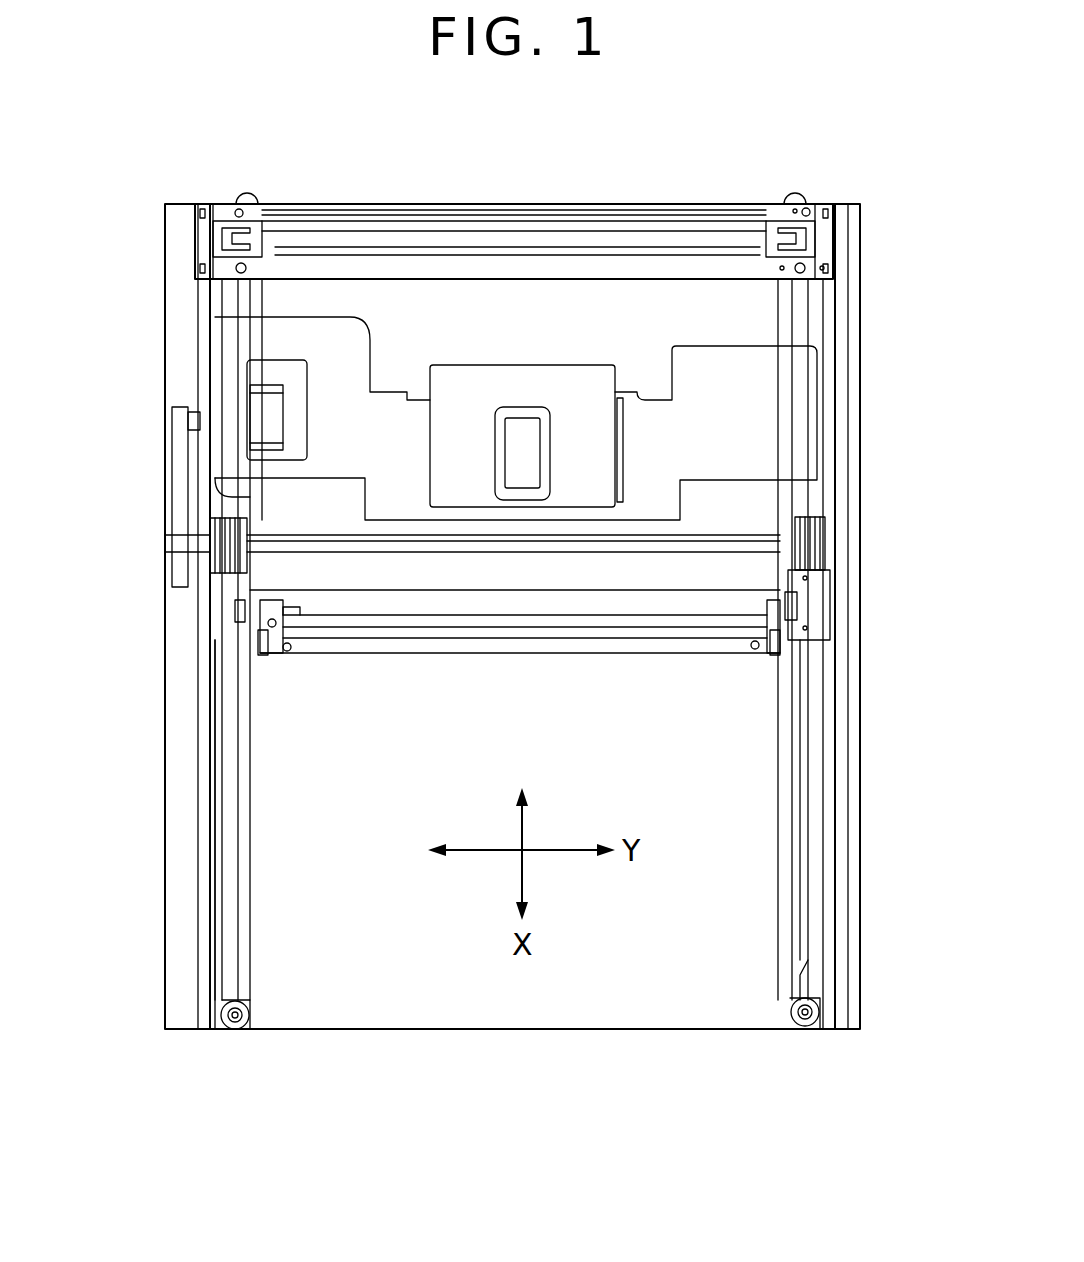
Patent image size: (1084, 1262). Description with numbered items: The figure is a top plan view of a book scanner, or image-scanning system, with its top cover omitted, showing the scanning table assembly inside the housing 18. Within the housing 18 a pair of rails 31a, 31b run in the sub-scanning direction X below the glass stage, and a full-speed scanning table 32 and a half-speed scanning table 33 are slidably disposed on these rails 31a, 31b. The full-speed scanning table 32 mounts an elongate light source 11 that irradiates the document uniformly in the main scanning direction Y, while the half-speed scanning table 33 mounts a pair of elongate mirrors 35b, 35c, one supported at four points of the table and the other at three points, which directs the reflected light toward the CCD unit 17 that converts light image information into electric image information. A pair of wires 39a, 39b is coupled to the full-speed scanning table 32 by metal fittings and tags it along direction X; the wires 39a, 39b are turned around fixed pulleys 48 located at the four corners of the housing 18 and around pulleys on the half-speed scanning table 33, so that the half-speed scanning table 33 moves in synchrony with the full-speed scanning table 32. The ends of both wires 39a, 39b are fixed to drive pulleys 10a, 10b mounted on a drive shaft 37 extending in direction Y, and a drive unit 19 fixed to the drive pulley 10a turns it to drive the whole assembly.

The light source 11 is at (487, 236).
The CCD unit 17 is at (540, 455).
The housing 18 is at (165, 873).
The drive unit 19 is at (255, 412).
The drive pulley 10a is at (820, 575).
The drive pulley 10b is at (235, 525).
The rail 31a is at (240, 808).
The rail 31b is at (808, 818).
The full-speed scanning table 32 is at (735, 280).
The half-speed scanning table 33 is at (740, 655).
The elongate mirror 35b is at (268, 648).
The elongate mirror 35c is at (352, 650).
The drive shaft 37 is at (300, 550).
The wire 39a is at (245, 935).
The wire 39b is at (808, 930).
The fixed pulley 48 is at (247, 195).